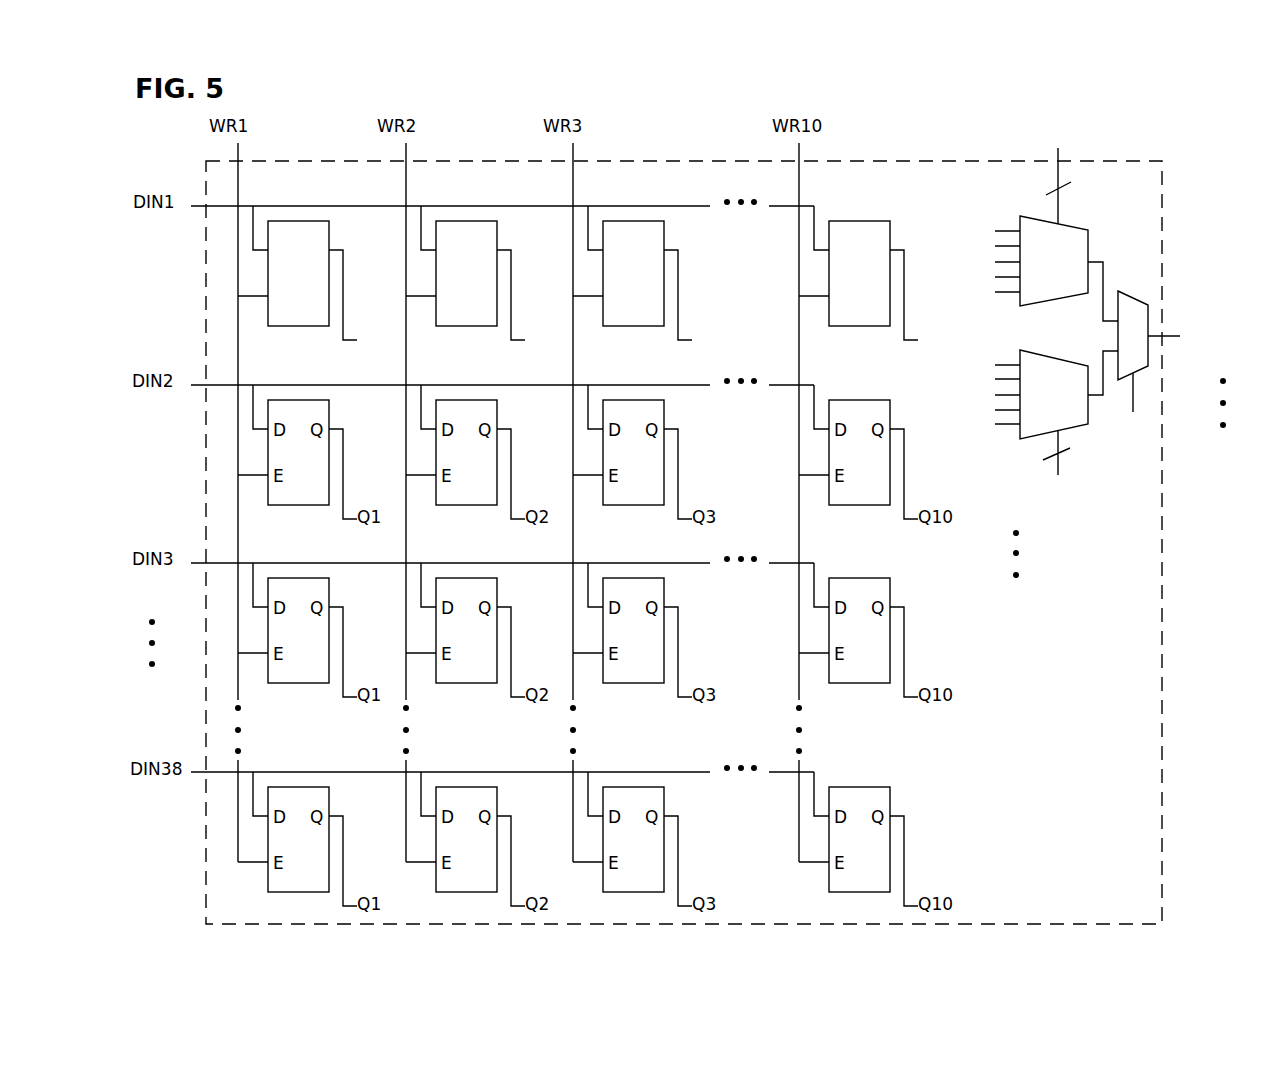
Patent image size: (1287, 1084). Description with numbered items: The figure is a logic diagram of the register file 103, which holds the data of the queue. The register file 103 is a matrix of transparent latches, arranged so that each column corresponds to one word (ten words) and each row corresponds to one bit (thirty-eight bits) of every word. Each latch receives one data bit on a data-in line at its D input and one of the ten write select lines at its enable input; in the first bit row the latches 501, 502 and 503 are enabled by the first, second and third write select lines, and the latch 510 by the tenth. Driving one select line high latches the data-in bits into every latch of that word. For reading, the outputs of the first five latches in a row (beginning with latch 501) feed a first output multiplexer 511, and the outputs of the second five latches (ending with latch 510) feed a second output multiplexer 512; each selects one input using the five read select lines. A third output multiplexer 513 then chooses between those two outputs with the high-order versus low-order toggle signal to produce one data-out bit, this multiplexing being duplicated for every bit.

The transparent latch 501 is at (309, 277).
The transparent latch 502 is at (477, 277).
The transparent latch 503 is at (644, 277).
The transparent latch 510 is at (876, 277).
The first output multiplexer 511 is at (1036, 224).
The second output multiplexer 512 is at (1037, 425).
The third output multiplexer 513 is at (1107, 339).
The register file 103 is at (684, 542).